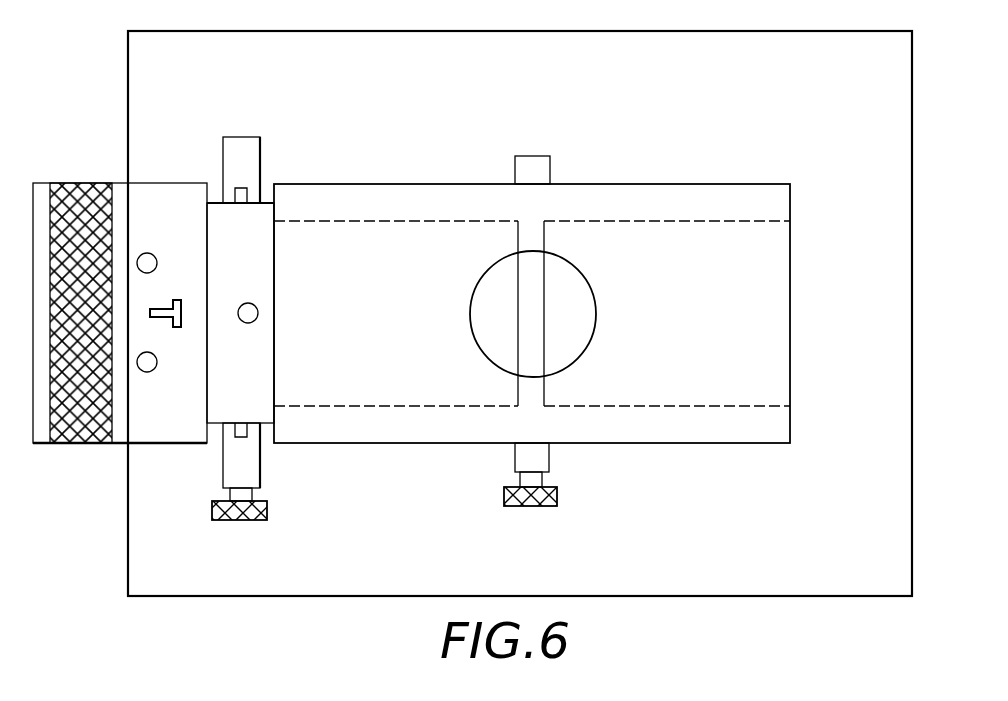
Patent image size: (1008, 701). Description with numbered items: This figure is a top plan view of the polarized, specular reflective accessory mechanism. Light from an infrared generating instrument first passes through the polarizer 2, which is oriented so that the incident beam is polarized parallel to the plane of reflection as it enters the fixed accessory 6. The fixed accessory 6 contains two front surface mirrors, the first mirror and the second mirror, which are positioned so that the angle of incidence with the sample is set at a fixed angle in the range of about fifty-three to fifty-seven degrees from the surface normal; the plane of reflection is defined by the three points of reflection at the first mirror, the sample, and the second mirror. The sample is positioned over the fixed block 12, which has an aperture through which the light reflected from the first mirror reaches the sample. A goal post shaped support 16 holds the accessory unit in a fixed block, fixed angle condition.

The fixed accessory 6 is at (605, 140).
The polarizer 2 is at (80, 443).
The fixed block 12 is at (683, 185).
The goal post shaped support 16 is at (550, 455).